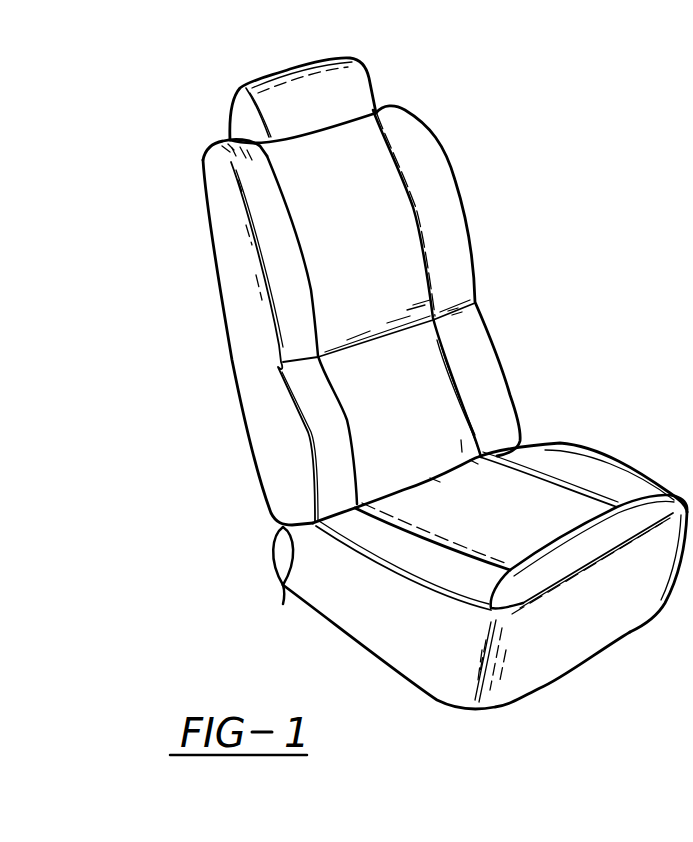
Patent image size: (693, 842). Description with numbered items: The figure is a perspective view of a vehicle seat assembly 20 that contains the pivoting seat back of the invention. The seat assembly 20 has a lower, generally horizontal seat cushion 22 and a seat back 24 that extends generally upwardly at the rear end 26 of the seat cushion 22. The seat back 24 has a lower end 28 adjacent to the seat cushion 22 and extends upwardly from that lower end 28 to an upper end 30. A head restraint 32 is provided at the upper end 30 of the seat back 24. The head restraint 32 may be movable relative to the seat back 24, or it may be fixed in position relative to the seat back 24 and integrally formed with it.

The seat assembly 20 is at (397, 376).
The seat cushion 22 is at (614, 457).
The seat back 24 is at (313, 311).
The rear end 26 is at (270, 546).
The lower end 28 is at (283, 586).
The upper end 30 is at (223, 142).
The head restraint 32 is at (371, 80).